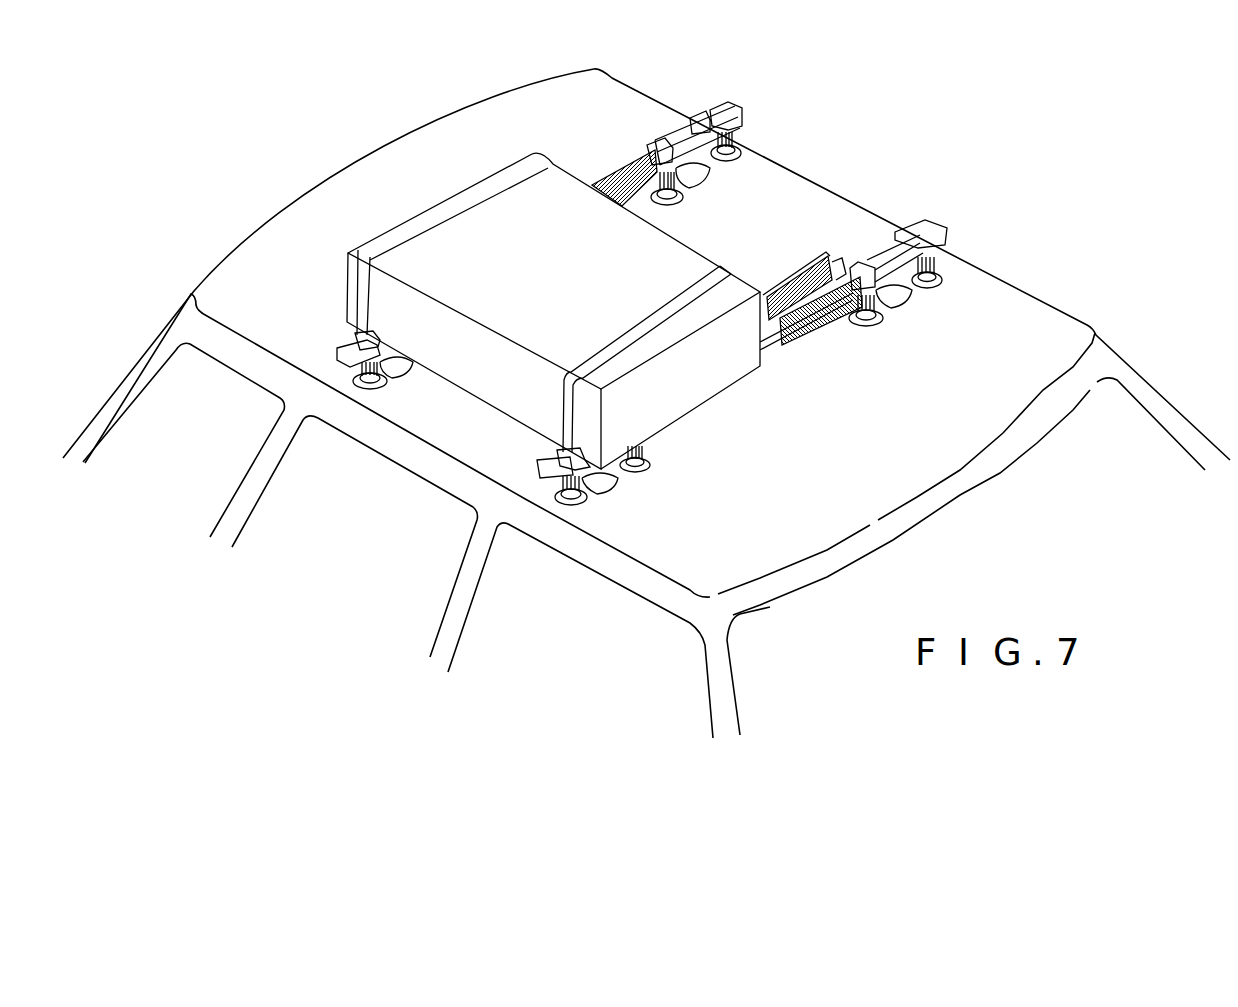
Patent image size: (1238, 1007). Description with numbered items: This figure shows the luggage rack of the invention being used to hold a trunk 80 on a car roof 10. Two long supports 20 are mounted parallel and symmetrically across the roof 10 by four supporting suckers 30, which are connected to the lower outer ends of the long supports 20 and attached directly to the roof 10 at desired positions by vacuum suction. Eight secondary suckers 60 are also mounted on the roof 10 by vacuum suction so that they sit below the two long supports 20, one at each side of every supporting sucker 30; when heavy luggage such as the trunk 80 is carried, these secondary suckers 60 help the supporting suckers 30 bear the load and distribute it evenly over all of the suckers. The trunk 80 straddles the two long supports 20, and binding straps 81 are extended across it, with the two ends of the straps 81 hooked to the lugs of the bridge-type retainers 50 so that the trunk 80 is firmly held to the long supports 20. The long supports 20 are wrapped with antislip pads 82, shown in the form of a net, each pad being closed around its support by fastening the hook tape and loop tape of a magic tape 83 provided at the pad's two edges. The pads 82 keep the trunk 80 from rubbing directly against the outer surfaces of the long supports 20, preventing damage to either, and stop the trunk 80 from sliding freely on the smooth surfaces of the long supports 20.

The roof 10 is at (790, 188).
The long supports 20 is at (773, 353).
The supporting suckers 30 is at (708, 182).
The bridge-type retainers 50 is at (357, 336).
The secondary suckers 60 is at (383, 383).
The trunk 80 is at (470, 183).
The binding straps 81 is at (457, 217).
The antislip pads 82 is at (622, 172).
The magic tape 83 is at (844, 264).